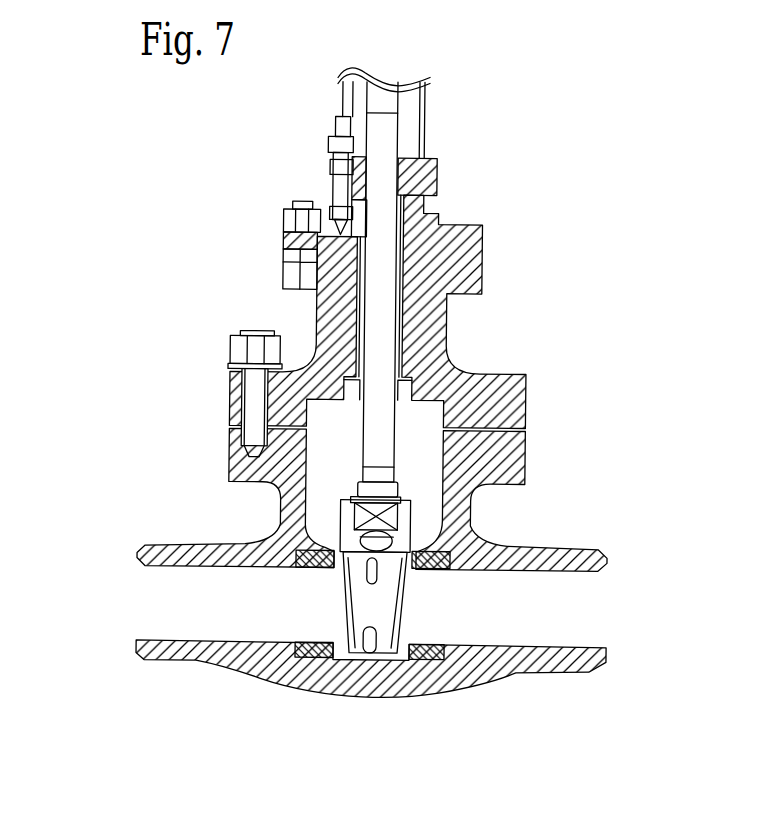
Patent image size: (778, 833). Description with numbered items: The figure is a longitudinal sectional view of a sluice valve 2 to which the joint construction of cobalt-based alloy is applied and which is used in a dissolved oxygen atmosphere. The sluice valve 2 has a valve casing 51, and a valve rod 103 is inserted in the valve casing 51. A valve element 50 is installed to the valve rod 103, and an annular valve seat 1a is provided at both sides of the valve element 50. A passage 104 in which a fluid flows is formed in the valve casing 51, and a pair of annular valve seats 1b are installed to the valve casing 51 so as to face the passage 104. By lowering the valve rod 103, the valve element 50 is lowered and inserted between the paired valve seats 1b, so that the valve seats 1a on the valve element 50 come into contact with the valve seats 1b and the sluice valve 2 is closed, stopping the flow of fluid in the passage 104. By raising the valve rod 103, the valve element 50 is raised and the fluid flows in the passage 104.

The annular valve seat 1a is at (400, 672).
The annular valve seat 1b is at (443, 577).
The sluice valve 2 is at (473, 343).
The valve element 50 is at (365, 608).
The valve casing 51 is at (542, 548).
The valve rod 103 is at (385, 143).
The passage 104 is at (147, 595).